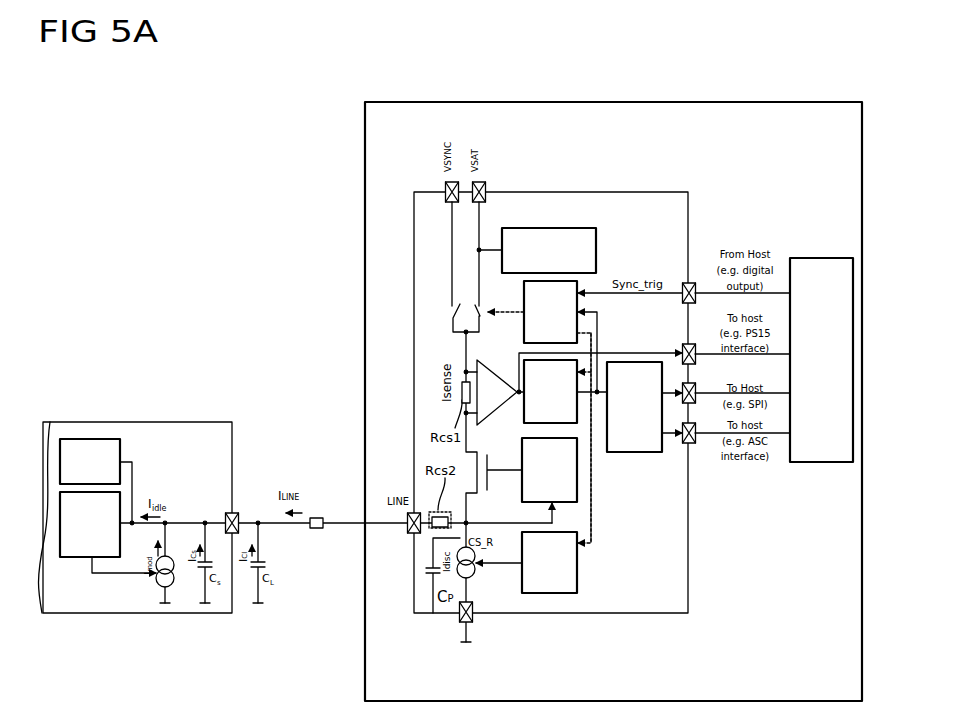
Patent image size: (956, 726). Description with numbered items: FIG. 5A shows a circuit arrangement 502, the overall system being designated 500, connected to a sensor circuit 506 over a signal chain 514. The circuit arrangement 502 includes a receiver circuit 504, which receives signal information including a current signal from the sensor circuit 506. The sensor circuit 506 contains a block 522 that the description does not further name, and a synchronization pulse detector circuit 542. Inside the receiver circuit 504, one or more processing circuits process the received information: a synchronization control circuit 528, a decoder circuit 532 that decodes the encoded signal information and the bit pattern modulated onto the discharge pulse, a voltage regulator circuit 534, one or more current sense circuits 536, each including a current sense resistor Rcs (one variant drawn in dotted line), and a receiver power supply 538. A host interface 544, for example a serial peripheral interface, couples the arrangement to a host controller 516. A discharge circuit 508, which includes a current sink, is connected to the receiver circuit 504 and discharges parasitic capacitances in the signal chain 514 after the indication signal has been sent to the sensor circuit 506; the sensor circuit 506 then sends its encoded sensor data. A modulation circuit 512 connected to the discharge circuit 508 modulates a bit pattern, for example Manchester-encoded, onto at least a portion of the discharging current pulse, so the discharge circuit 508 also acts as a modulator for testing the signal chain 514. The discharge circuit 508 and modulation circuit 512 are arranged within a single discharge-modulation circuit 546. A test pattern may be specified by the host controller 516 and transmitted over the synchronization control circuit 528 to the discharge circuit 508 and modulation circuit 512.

The sensor system 500 is at (786, 41).
The circuit arrangement 502 is at (590, 102).
The receiver circuit 504 is at (633, 192).
The sensor circuit 506 is at (198, 422).
The discharge circuit 508 is at (549, 562).
The modulation circuit 512 is at (549, 562).
The signal chain 514 is at (330, 520).
The host controller 516 is at (821, 360).
The sensor element 522 is at (100, 439).
The synchronization control circuit 528 is at (550, 312).
The decoder circuit 532 is at (550, 391).
The voltage regulator circuit 534 is at (549, 470).
The current sense circuit 536 is at (497, 392).
The receiver power supply 538 is at (537, 250).
The synchronization pulse detector circuit 542 is at (82, 557).
The host interface 544 is at (634, 407).
The discharge-modulation circuit 546 is at (577, 560).